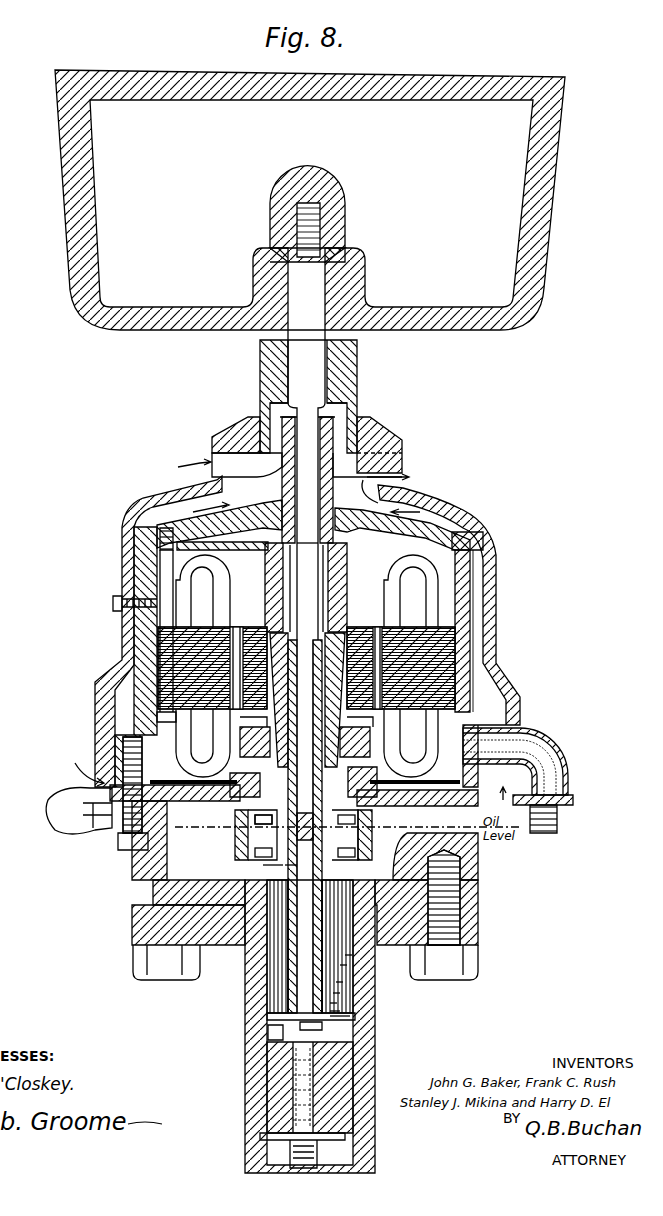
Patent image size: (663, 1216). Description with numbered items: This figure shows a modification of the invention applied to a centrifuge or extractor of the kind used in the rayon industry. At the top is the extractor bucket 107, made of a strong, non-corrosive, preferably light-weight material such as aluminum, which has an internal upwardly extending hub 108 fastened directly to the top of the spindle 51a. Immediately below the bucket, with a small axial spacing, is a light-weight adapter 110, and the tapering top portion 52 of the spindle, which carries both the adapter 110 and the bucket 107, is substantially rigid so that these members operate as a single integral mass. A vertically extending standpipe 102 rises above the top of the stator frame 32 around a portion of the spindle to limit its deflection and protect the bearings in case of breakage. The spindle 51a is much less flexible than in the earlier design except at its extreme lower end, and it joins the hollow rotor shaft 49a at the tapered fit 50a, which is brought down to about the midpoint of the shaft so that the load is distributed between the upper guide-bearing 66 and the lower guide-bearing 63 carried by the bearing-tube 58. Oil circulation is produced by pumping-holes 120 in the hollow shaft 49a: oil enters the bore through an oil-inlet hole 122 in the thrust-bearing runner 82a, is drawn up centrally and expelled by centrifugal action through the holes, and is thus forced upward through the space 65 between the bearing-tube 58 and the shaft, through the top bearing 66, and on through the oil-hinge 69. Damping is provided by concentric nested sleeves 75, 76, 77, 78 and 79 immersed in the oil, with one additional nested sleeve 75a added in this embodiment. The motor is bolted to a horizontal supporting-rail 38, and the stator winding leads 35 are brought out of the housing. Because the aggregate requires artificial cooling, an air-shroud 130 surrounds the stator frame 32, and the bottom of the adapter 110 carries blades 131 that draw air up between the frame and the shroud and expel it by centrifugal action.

The extractor bucket 107 is at (556, 135).
The hub 108 is at (360, 273).
The tapering top portion of the spindle 52 is at (333, 302).
The adapter 110 is at (402, 406).
The standpipe 102 is at (333, 425).
The blades 131 is at (423, 455).
The air-shroud 130 is at (490, 626).
The stator frame 32 is at (433, 527).
The hollow rotor shaft 49a is at (267, 546).
The spindle 51a is at (310, 589).
The upper journal bearing 66 is at (280, 630).
The oil-hinge annular space 69 is at (336, 632).
The supporting-rail 38 is at (478, 930).
The leads 35 is at (560, 823).
The pumping-holes 120 is at (258, 958).
The lower journal bearing 63 is at (265, 1028).
The tapered fit 50a is at (237, 826).
The space between bearing-tube and rotor-shaft 65 is at (285, 868).
The bearing-tube 58 is at (290, 871).
The additional nested sleeve 75a is at (352, 957).
The inner damping ring 75 is at (350, 968).
The damping ring 76 is at (345, 985).
The damping ring 77 is at (340, 995).
The damping ring 78 is at (335, 1005).
The outer damping ring 79 is at (338, 1014).
The oil-inlet hole 122 is at (352, 1020).
The thrust-bearing runner 82a is at (322, 1026).